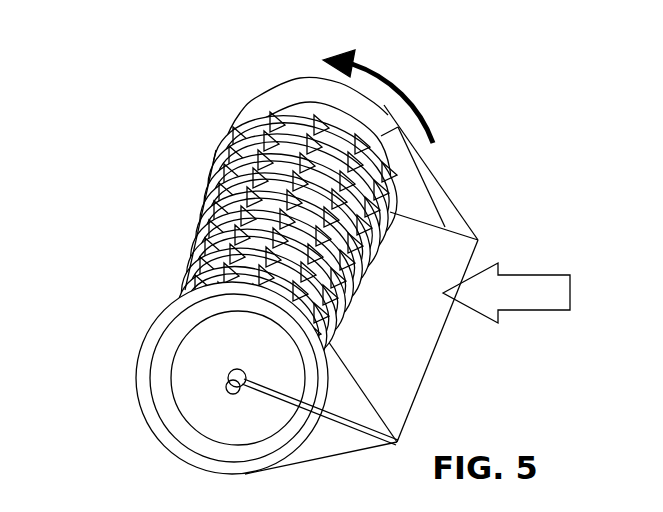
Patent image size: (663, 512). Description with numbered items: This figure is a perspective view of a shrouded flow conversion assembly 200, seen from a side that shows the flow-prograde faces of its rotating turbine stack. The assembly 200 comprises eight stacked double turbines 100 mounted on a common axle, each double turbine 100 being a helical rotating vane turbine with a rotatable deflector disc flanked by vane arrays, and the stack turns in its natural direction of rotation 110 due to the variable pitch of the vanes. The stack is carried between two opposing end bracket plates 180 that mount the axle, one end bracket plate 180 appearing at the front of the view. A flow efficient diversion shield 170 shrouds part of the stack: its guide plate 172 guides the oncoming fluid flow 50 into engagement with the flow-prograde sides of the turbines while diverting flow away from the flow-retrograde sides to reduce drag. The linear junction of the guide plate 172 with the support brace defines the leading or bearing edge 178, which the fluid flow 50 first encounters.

The fluid flow 50 is at (516, 305).
The double turbine 100 is at (185, 255).
The natural direction of rotation 110 is at (388, 76).
The diversion shield 170 is at (458, 188).
The guide plate 172 is at (417, 362).
The leading or bearing edge 178 is at (417, 388).
The end bracket plate 180 is at (162, 395).
The shrouded flow conversion assembly 200 is at (230, 97).